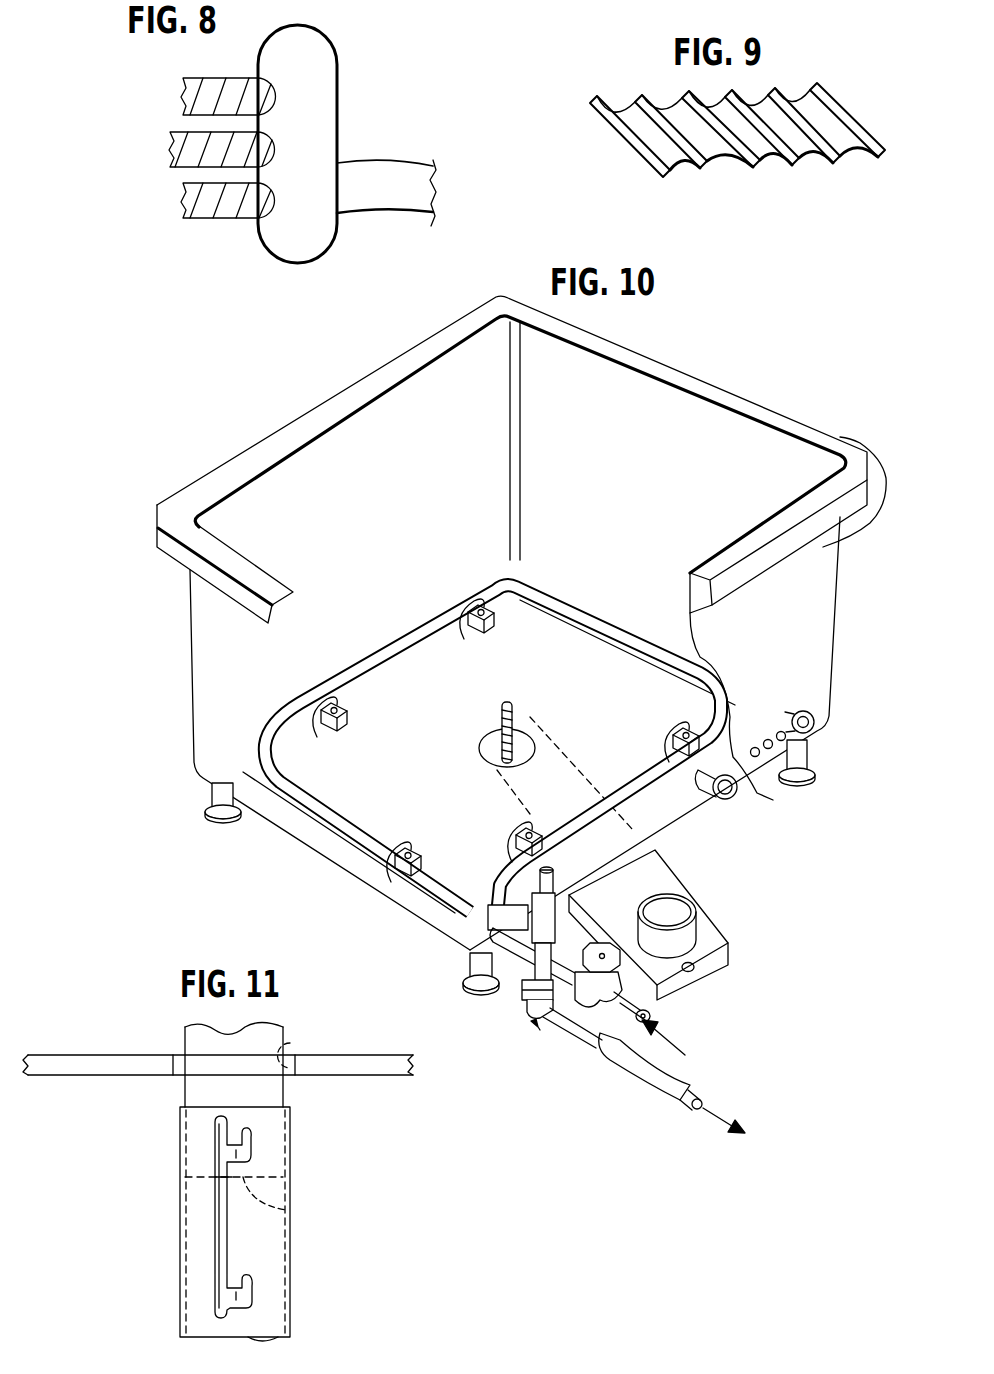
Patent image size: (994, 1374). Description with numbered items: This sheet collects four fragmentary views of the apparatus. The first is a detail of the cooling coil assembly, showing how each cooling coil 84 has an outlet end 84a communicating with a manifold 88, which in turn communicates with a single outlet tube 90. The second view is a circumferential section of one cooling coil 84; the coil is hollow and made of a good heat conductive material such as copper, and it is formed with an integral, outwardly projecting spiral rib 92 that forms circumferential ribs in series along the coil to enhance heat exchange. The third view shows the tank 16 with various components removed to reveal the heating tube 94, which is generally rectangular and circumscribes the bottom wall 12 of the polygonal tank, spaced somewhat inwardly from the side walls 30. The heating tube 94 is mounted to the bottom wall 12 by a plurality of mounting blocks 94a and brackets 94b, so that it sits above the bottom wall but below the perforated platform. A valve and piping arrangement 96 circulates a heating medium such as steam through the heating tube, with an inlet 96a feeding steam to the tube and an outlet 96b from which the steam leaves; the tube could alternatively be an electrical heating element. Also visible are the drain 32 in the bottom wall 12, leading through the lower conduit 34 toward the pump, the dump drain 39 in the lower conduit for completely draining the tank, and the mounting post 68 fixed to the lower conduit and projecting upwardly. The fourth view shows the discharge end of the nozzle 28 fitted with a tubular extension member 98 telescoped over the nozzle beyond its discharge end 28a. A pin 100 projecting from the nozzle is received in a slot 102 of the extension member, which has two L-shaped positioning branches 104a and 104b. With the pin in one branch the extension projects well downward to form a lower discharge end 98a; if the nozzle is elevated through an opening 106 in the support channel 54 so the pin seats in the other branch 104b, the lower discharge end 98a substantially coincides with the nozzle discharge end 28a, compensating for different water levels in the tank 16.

In FIG. 10, the bottom wall 12 is at (330, 780).
In FIG. 10, the tank 16 is at (836, 595).
In FIG. 11, the nozzle 28 is at (200, 1092).
In FIG. 11, the discharge end 28a is at (290, 1210).
In FIG. 10, the side walls 30 is at (207, 592).
In FIG. 10, the drain 32 is at (705, 892).
In FIG. 10, the lower conduit 34 is at (667, 880).
In FIG. 10, the dump drain 39 is at (703, 970).
In FIG. 11, the support channel 54 is at (360, 1063).
In FIG. 10, the mounting post 68 is at (513, 703).
In FIG. 9, the cooling coil 84 is at (708, 152).
In FIG. 8, the outlet end 84a is at (183, 203).
In FIG. 8, the manifold 88 is at (327, 100).
In FIG. 8, the outlet tube 90 is at (385, 173).
In FIG. 9, the spiral rib 92 is at (818, 157).
In FIG. 10, the heating tube 94 is at (365, 680).
In FIG. 10, the mounting blocks 94a is at (262, 745).
In FIG. 10, the brackets 94b is at (472, 607).
In FIG. 10, the valve and piping arrangement 96 is at (540, 1030).
In FIG. 10, the inlet 96a is at (645, 1008).
In FIG. 10, the outlet 96b is at (683, 1090).
In FIG. 11, the extension member 98 is at (200, 1240).
In FIG. 11, the lower discharge end 98a is at (257, 1337).
In FIG. 11, the pin 100 is at (243, 1137).
In FIG. 11, the slot 102 is at (217, 1193).
In FIG. 11, the positioning branch 104a is at (240, 1160).
In FIG. 11, the positioning branch 104b is at (243, 1308).
In FIG. 11, the opening 106 is at (293, 1033).